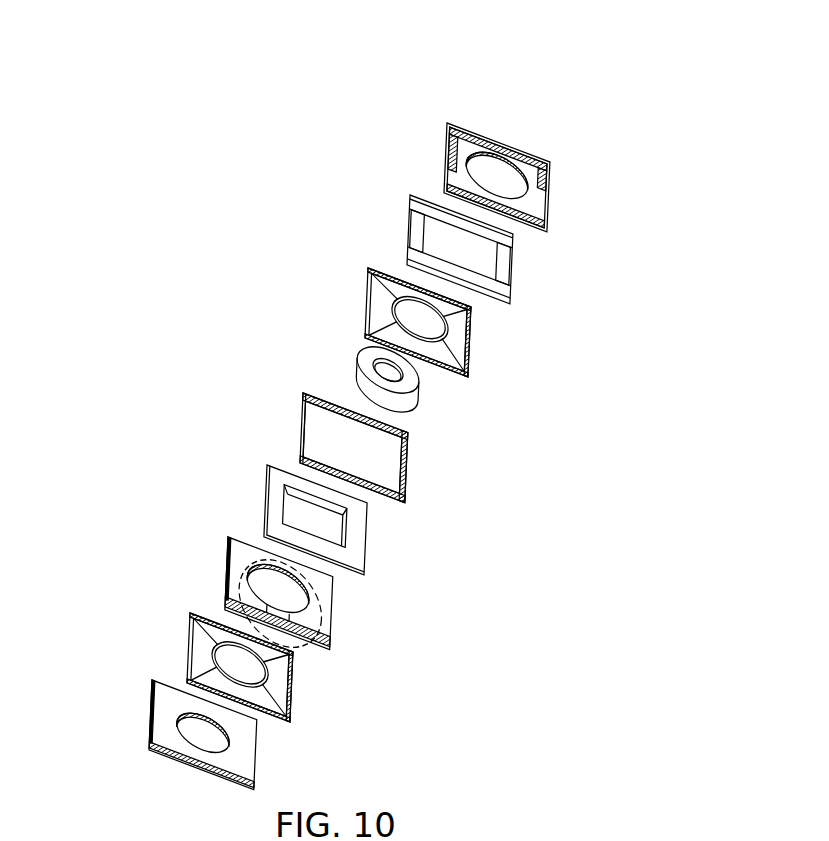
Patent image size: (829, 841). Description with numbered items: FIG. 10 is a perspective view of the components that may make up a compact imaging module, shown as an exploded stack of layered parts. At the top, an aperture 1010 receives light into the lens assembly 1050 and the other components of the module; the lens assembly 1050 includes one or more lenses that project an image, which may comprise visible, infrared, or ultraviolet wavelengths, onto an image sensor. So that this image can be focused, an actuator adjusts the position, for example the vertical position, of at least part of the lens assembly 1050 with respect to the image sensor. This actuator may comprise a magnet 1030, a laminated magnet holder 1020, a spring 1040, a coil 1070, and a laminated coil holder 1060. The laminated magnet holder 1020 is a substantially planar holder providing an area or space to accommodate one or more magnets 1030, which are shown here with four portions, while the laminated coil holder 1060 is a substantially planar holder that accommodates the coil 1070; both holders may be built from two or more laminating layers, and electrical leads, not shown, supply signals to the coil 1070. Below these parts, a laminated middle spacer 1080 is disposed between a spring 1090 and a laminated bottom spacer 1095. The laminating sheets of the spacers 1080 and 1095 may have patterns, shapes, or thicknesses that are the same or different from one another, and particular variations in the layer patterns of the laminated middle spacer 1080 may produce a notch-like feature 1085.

The aperture 1010 is at (528, 145).
The laminated magnet holder 1020 is at (547, 198).
The magnet 1030 is at (509, 264).
The spring 1040 is at (469, 332).
The lens assembly 1050 is at (417, 398).
The laminated coil holder 1060 is at (405, 473).
The coil 1070 is at (366, 543).
The laminated middle spacer 1080 is at (329, 618).
The notch-like feature 1085 is at (243, 588).
The spring 1090 is at (288, 682).
The laminated bottom spacer 1095 is at (253, 757).